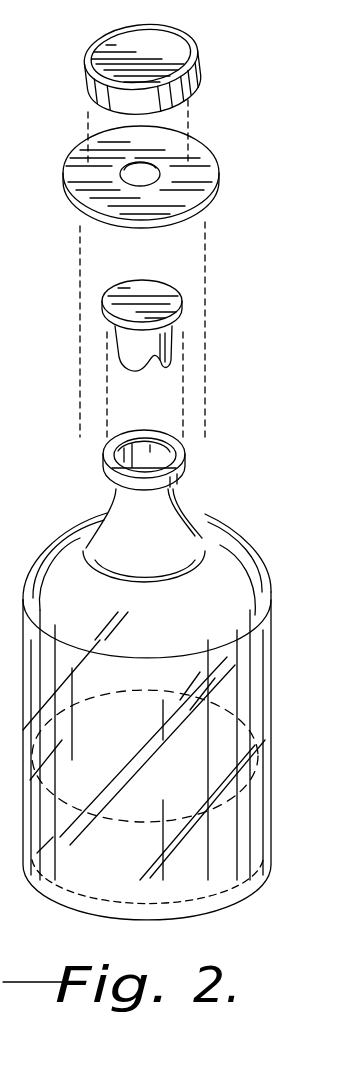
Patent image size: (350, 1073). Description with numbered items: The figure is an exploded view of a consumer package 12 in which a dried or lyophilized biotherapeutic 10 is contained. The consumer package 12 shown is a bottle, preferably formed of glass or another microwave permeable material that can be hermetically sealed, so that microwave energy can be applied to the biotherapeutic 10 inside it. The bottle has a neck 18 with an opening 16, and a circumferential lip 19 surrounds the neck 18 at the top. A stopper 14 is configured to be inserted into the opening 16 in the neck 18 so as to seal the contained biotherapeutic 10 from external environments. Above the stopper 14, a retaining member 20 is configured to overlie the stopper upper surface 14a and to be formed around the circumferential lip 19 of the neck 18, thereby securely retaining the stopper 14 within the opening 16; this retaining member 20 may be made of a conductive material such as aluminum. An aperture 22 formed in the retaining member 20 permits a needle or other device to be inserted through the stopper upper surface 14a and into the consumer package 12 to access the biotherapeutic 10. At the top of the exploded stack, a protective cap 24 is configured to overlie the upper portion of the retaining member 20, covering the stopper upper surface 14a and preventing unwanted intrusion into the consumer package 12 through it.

The dried or lyophilized biotherapeutic 10 is at (72, 896).
The consumer package 12 is at (253, 533).
The stopper 14 is at (180, 317).
The stopper upper surface 14a is at (160, 302).
The opening 16 is at (160, 447).
The neck 18 is at (177, 520).
The circumferential lip 19 is at (113, 483).
The retaining member 20 is at (203, 192).
The aperture 22 is at (150, 173).
The protective cap 24 is at (175, 60).